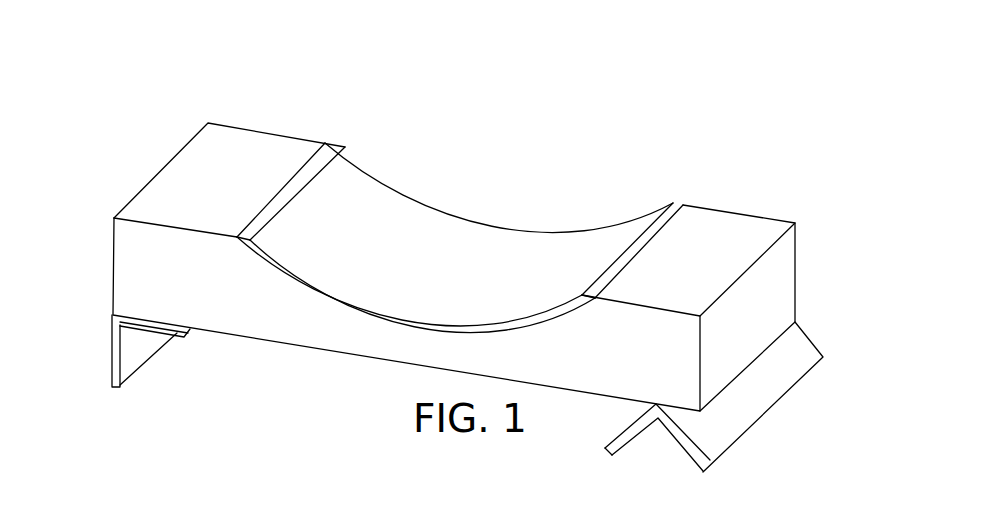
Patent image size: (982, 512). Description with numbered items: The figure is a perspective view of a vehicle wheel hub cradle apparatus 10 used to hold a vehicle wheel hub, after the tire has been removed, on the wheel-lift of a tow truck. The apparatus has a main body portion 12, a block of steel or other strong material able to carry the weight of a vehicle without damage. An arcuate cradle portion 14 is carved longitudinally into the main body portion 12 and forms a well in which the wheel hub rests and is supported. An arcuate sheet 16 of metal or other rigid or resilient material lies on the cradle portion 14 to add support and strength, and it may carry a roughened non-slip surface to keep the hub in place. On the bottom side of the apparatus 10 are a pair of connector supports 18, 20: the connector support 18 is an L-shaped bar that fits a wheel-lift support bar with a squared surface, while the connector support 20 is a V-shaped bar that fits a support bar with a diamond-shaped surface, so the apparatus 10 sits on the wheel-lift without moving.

The vehicle wheel hub cradle apparatus 10 is at (435, 270).
The main body portion 12 is at (132, 255).
The cradle portion 14 is at (395, 197).
The arcuate sheet 16 is at (358, 313).
The connector support 18 is at (112, 370).
The connector support 20 is at (695, 447).